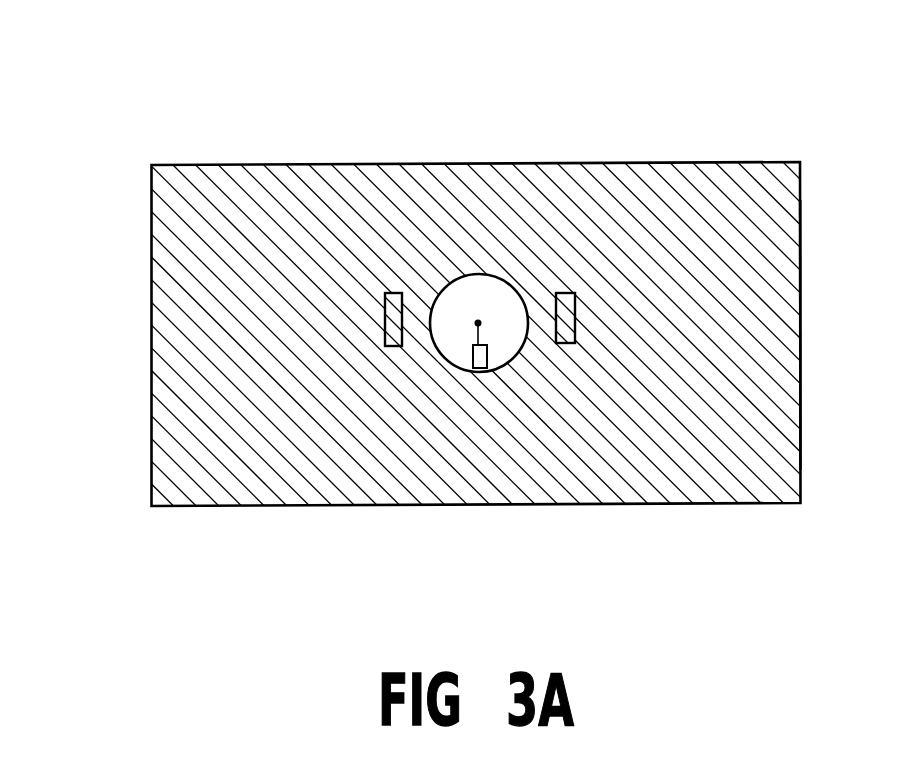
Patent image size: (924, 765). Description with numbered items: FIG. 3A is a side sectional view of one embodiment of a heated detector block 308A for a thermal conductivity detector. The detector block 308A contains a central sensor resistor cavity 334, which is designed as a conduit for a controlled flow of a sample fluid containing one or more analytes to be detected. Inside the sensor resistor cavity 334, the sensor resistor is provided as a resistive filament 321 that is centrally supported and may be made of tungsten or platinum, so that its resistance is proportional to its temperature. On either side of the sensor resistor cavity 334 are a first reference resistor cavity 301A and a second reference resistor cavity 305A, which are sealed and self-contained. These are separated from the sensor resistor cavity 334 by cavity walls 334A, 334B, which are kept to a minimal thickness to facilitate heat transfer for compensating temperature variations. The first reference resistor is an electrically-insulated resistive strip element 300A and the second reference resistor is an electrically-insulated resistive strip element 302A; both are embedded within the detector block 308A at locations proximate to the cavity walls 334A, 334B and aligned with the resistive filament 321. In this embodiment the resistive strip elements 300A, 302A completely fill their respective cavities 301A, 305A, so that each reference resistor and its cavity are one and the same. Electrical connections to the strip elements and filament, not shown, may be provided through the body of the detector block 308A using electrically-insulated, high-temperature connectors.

The resistive strip element 300A is at (385, 327).
The first reference resistor cavity 301A is at (393, 293).
The second reference resistor cavity 305A is at (565, 293).
The sensor resistor cavity 334 is at (480, 273).
The resistive filament 321 is at (497, 332).
The cavity wall 334A is at (424, 342).
The cavity wall 334B is at (533, 342).
The resistive strip element 302A is at (575, 310).
The detector block 308A is at (800, 375).